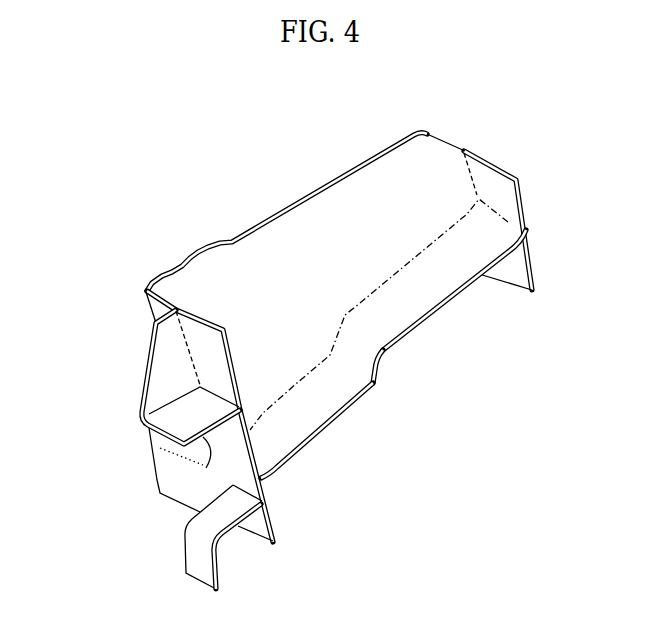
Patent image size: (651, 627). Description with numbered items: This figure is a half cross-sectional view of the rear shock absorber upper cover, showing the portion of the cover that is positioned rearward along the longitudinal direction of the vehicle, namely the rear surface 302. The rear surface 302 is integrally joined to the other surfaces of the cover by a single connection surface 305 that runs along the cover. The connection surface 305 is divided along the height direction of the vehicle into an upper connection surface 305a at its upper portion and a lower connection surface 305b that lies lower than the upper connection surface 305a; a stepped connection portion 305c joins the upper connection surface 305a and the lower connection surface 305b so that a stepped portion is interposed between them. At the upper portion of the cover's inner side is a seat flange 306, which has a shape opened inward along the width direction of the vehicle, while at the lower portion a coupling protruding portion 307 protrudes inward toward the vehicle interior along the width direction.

The rear surface 302 is at (294, 208).
The connection surface 305 is at (415, 359).
The upper connection surface 305a is at (479, 271).
The lower connection surface 305b is at (340, 433).
The stepped connection portion 305c is at (385, 368).
The seat flange 306 is at (134, 437).
The coupling protruding portion 307 is at (194, 560).